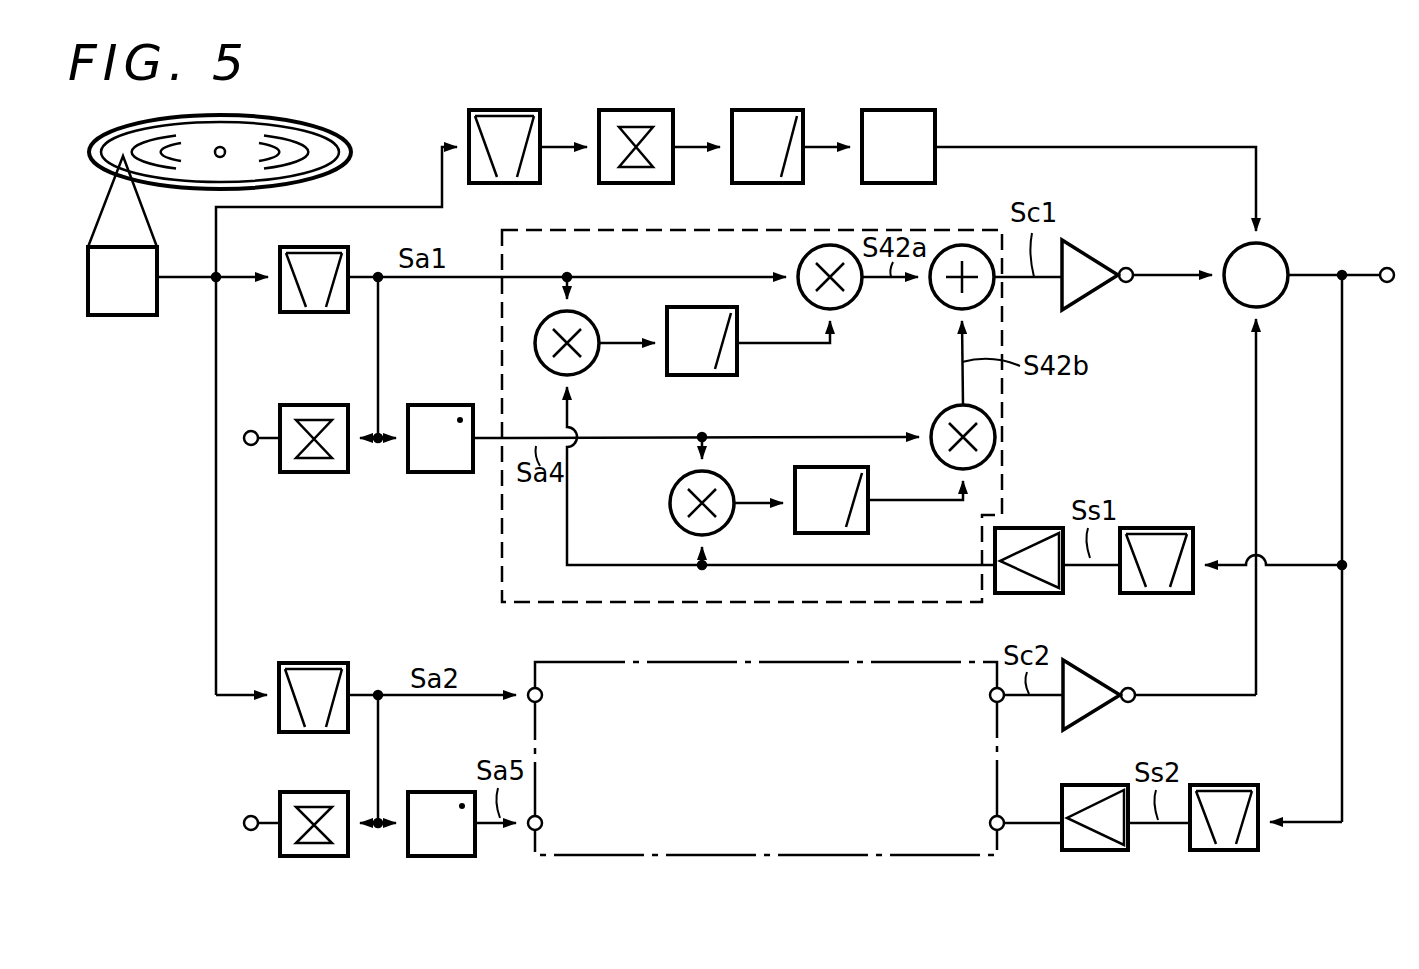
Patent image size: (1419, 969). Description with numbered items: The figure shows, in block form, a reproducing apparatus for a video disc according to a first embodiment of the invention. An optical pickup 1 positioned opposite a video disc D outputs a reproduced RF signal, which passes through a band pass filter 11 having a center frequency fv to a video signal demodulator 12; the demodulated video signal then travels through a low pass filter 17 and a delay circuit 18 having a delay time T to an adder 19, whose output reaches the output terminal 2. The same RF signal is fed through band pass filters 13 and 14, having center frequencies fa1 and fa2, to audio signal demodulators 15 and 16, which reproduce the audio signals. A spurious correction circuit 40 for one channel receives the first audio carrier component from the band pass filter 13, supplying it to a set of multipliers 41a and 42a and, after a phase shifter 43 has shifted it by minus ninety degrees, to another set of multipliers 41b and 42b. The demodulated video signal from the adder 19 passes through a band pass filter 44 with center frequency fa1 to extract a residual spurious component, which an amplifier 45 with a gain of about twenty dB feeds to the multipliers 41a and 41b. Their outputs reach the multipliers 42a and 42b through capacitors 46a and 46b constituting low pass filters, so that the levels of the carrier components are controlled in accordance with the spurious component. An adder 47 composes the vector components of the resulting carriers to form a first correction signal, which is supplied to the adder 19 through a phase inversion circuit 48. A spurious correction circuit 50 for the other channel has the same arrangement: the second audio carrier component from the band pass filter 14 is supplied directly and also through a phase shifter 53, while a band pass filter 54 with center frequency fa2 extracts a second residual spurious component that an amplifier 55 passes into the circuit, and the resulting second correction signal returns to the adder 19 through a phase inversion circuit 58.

The optical pickup 1 is at (120, 316).
The video disc D is at (352, 150).
The output terminal 2 is at (1385, 284).
The band pass filter 11 is at (504, 185).
The video signal demodulator 12 is at (636, 185).
The band pass filter 13 is at (300, 314).
The band pass filter 14 is at (273, 716).
The audio signal demodulator 15 is at (296, 474).
The audio signal demodulator 16 is at (272, 845).
The low pass filter 17 is at (766, 185).
The delay circuit 18 is at (896, 185).
The adder 19 is at (1229, 296).
The spurious correction circuit 40 is at (502, 600).
The multiplier 41a is at (545, 320).
The multiplier 41b is at (670, 503).
The multiplier 42a is at (855, 298).
The multiplier 42b is at (995, 437).
The phase shifter 43 is at (432, 474).
The band pass filter 44 is at (1166, 595).
The amplifier 45 is at (1034, 595).
The capacitor 46a is at (740, 360).
The capacitor 46b is at (842, 535).
The adder 47 is at (944, 304).
The phase inversion circuit 48 is at (1090, 295).
The spurious correction circuit 50 is at (742, 720).
The phase shifter 53 is at (404, 842).
The band pass filter 54 is at (1262, 832).
The amplifier 55 is at (1124, 838).
The phase inversion circuit 58 is at (1098, 710).